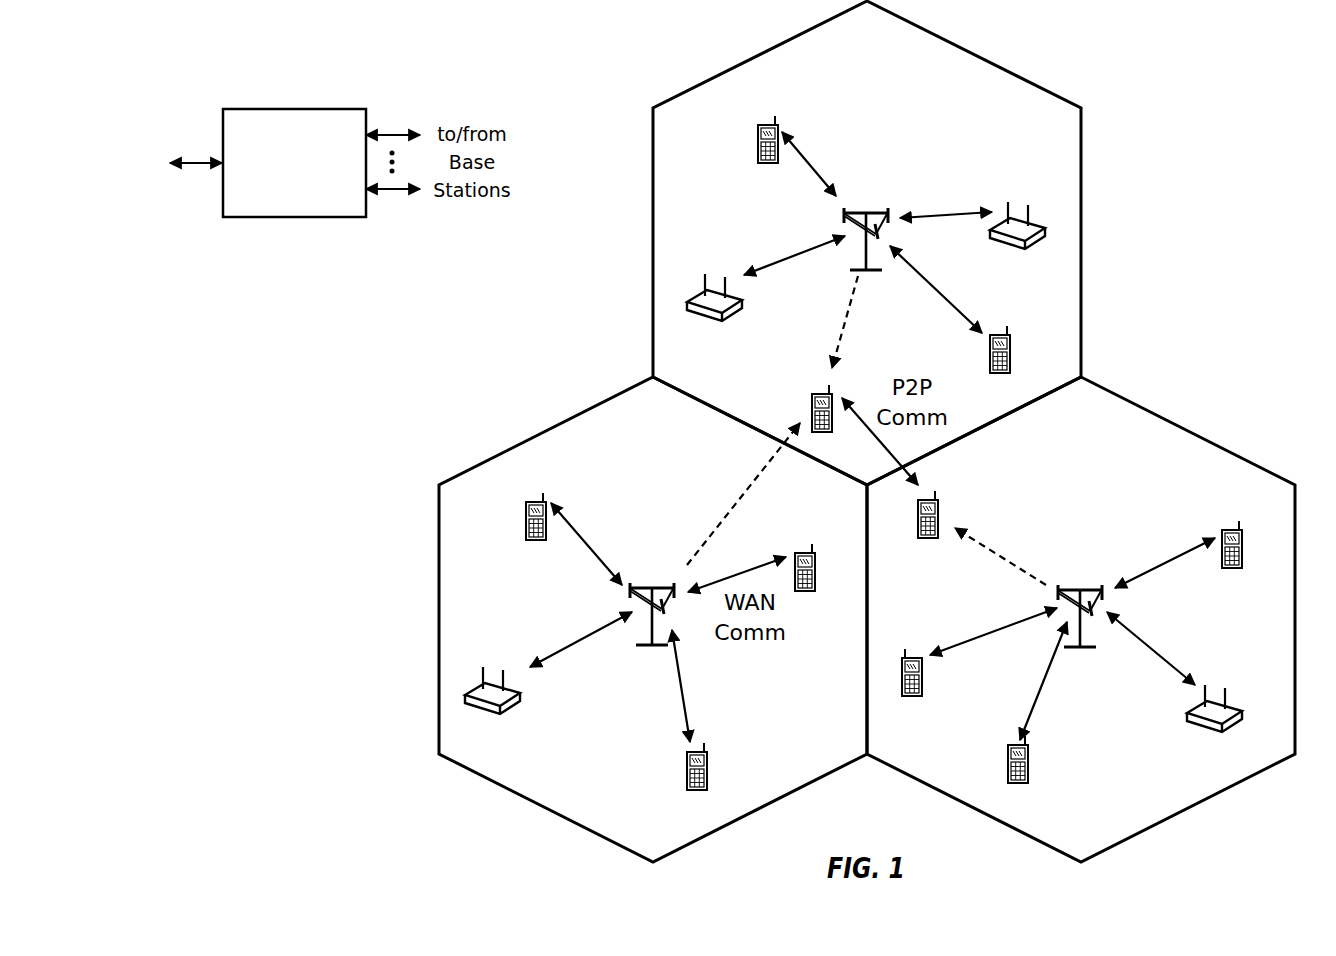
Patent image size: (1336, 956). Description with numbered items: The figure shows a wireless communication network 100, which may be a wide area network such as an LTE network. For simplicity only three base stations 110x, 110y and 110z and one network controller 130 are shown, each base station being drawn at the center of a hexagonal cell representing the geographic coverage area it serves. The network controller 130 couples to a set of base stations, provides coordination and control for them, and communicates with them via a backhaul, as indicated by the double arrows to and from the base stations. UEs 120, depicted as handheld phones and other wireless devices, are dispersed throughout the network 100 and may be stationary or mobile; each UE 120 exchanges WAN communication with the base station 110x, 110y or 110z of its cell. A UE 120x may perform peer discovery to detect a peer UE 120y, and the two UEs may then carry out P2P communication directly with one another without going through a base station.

The wireless communication network 100 is at (1232, 68).
The base station 110x is at (659, 572).
The base station 110y is at (876, 199).
The base station 110z is at (1078, 588).
The UE 120 is at (757, 135).
The UE 120x is at (811, 404).
The peer UE 120y is at (938, 512).
The network controller 130 is at (289, 109).